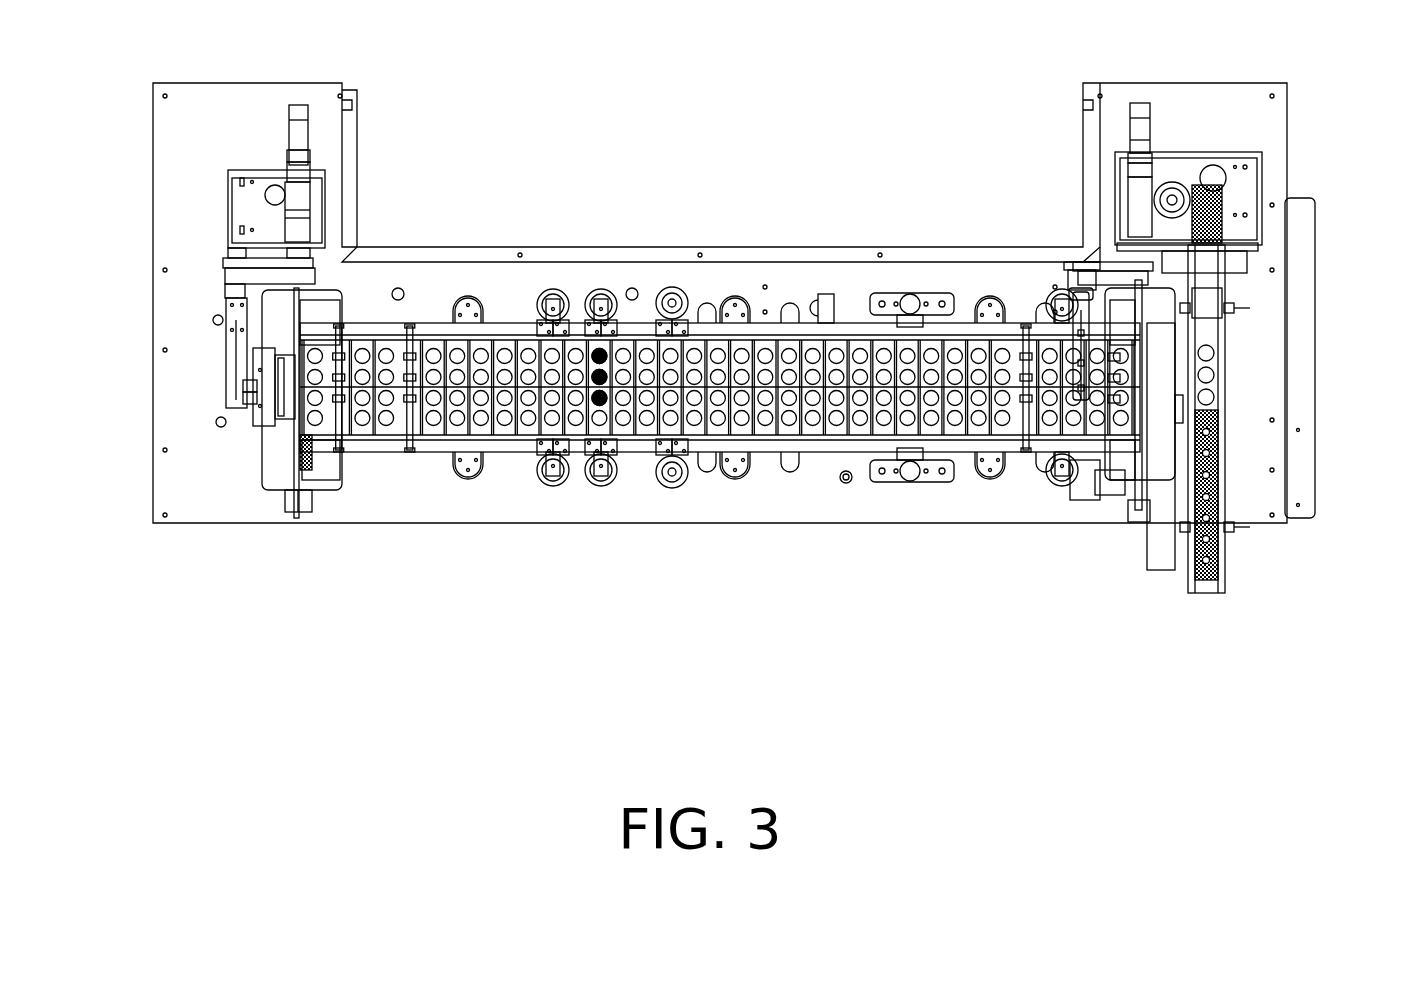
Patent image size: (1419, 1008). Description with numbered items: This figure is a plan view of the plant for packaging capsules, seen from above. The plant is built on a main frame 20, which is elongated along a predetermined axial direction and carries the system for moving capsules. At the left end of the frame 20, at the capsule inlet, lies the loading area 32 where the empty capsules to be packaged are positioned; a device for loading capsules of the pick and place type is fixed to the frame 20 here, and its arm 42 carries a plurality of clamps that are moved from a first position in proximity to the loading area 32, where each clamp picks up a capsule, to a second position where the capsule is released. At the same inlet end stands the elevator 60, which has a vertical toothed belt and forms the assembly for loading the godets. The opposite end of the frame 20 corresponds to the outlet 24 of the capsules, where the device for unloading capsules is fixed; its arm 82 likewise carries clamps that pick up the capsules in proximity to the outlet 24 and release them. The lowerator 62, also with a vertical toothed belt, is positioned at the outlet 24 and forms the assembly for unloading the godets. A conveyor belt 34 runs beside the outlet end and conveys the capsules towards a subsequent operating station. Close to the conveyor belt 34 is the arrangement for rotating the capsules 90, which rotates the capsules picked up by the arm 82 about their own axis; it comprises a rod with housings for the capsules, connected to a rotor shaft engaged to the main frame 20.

The main frame 20 is at (1287, 131).
The outlet 24 is at (1338, 492).
The loading area 32 is at (209, 453).
The conveyor belt 34 is at (1210, 595).
The arm 42 is at (233, 320).
The elevator 60 is at (266, 424).
The lowerator 62 is at (1127, 470).
The arm 82 is at (1073, 307).
The arrangement for rotating the capsules 90 is at (1210, 333).